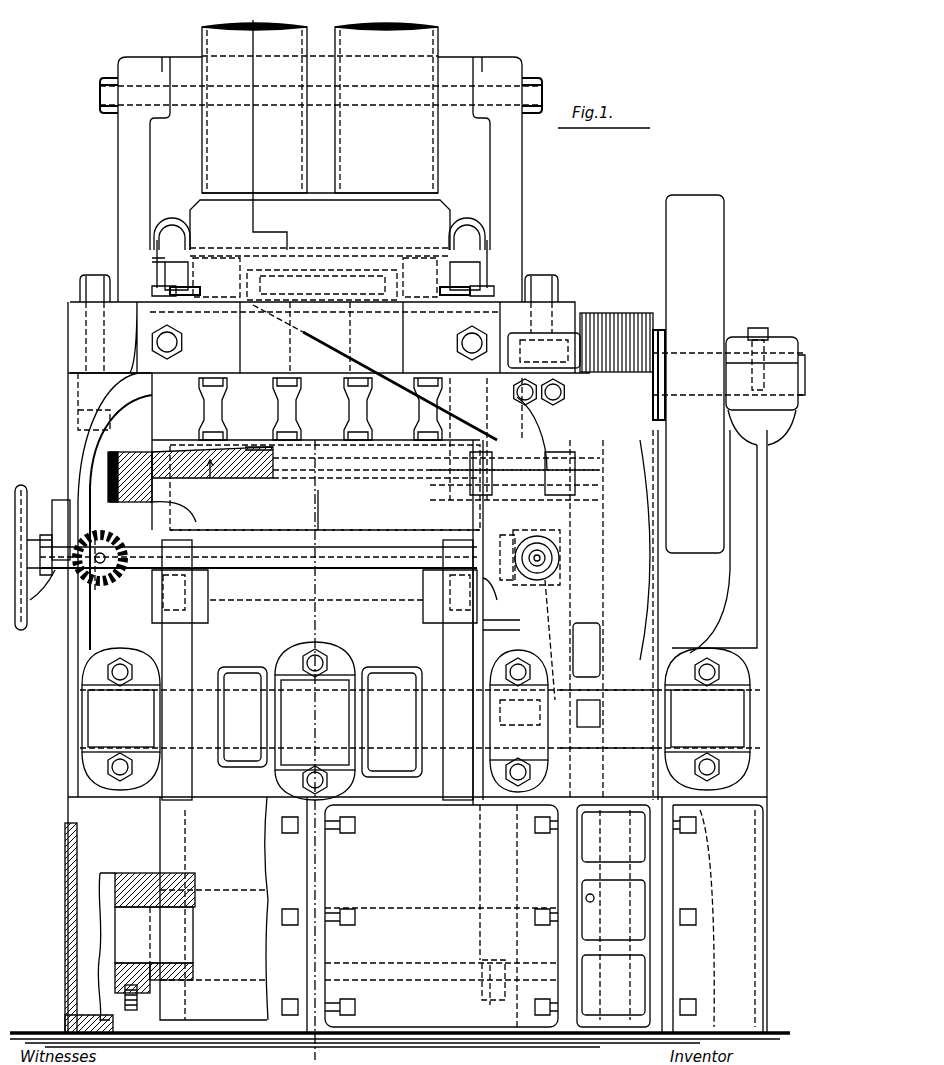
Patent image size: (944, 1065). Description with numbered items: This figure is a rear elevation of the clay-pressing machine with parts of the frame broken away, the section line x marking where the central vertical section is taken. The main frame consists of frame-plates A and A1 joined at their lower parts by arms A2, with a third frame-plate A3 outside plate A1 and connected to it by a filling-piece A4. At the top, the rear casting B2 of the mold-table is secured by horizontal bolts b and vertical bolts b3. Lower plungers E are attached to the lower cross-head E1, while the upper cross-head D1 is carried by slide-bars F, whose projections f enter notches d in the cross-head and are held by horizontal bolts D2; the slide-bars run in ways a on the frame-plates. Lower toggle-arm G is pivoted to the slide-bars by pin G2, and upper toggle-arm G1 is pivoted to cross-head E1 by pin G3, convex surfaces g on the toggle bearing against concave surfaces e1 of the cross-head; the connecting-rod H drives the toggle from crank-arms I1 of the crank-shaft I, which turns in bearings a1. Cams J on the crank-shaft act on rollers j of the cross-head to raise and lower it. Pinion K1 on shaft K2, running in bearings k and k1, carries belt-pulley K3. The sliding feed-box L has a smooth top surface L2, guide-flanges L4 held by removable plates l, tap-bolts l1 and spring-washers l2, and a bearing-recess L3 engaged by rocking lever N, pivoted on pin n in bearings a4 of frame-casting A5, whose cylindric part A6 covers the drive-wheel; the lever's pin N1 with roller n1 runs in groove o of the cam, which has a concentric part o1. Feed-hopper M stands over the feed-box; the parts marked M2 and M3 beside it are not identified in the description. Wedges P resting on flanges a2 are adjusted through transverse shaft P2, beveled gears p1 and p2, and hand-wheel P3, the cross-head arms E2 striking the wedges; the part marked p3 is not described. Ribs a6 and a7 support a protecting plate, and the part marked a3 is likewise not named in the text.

The section line x is at (266, 21).
The slide-bar F is at (125, 880).
The inwardly-extending projection f is at (160, 70).
The notch d is at (172, 72).
The upper cross-head D1 is at (321, 130).
The horizontal bolt D2 is at (118, 82).
The cylinder M2 is at (320, 108).
The feed-hopper M is at (320, 221).
The valve chamber cap M3 is at (178, 225).
The top surface of feed-box L2 is at (350, 258).
The sliding feed-box L is at (315, 277).
The guide-flange L4 is at (180, 295).
The bearing-recess L3 is at (317, 297).
The removable plate l is at (170, 290).
The tap-bolt l1 is at (321, 269).
The spring-washer l2 is at (152, 280).
The vertical bolt b3 is at (96, 275).
The mold-table casting B2 is at (565, 302).
The horizontal bolt b is at (180, 342).
The bearing k is at (548, 334).
The pinion K1 is at (628, 302).
The belt-pulley K3 is at (695, 374).
The pinion shaft K2 is at (806, 360).
The bearing k1 is at (768, 345).
The third frame-plate A3 is at (730, 731).
The frame-plate A is at (55, 694).
The lower plunger E is at (268, 400).
The rocking lever N is at (486, 439).
The frame-plate A1 is at (565, 852).
The bearing a4 is at (524, 471).
The pivot-pin n is at (470, 488).
The pivot-pin G3 is at (354, 474).
The convex bearing-surface g is at (210, 478).
The concave bearing-surface e1 is at (252, 448).
The projecting arm E2 is at (160, 452).
The lower cross-head E1 is at (325, 750).
The hand-wheel P3 is at (22, 515).
The transverse shaft P2 is at (297, 560).
The beveled gear p2 is at (120, 545).
The beveled gear p1 is at (560, 555).
The gear pin p3 is at (520, 585).
The wedge P is at (42, 601).
The frame-casting A5 is at (565, 615).
The cylindric part A6 is at (630, 552).
The cam groove o is at (588, 630).
The pin N1 is at (588, 713).
The anti-friction roller n1 is at (600, 700).
The inclined rib a7 is at (483, 590).
The frame lug a3 is at (478, 650).
The cam J is at (317, 670).
The anti-friction roller j is at (195, 585).
The crank-shaft I is at (80, 717).
The horizontal flange a2 is at (416, 718).
The bearing a1 is at (82, 770).
The connecting-rod H is at (315, 721).
The crank-arm I1 is at (420, 722).
The upper toggle-arm G1 is at (325, 573).
The lower toggle-arm G is at (216, 985).
The pivot-pin G2 is at (155, 933).
The guide way a is at (125, 1000).
The inclined rib a6 is at (475, 797).
The base arm A2 is at (412, 915).
The filling-piece A4 is at (619, 915).
The concentric cam part o1 is at (590, 895).